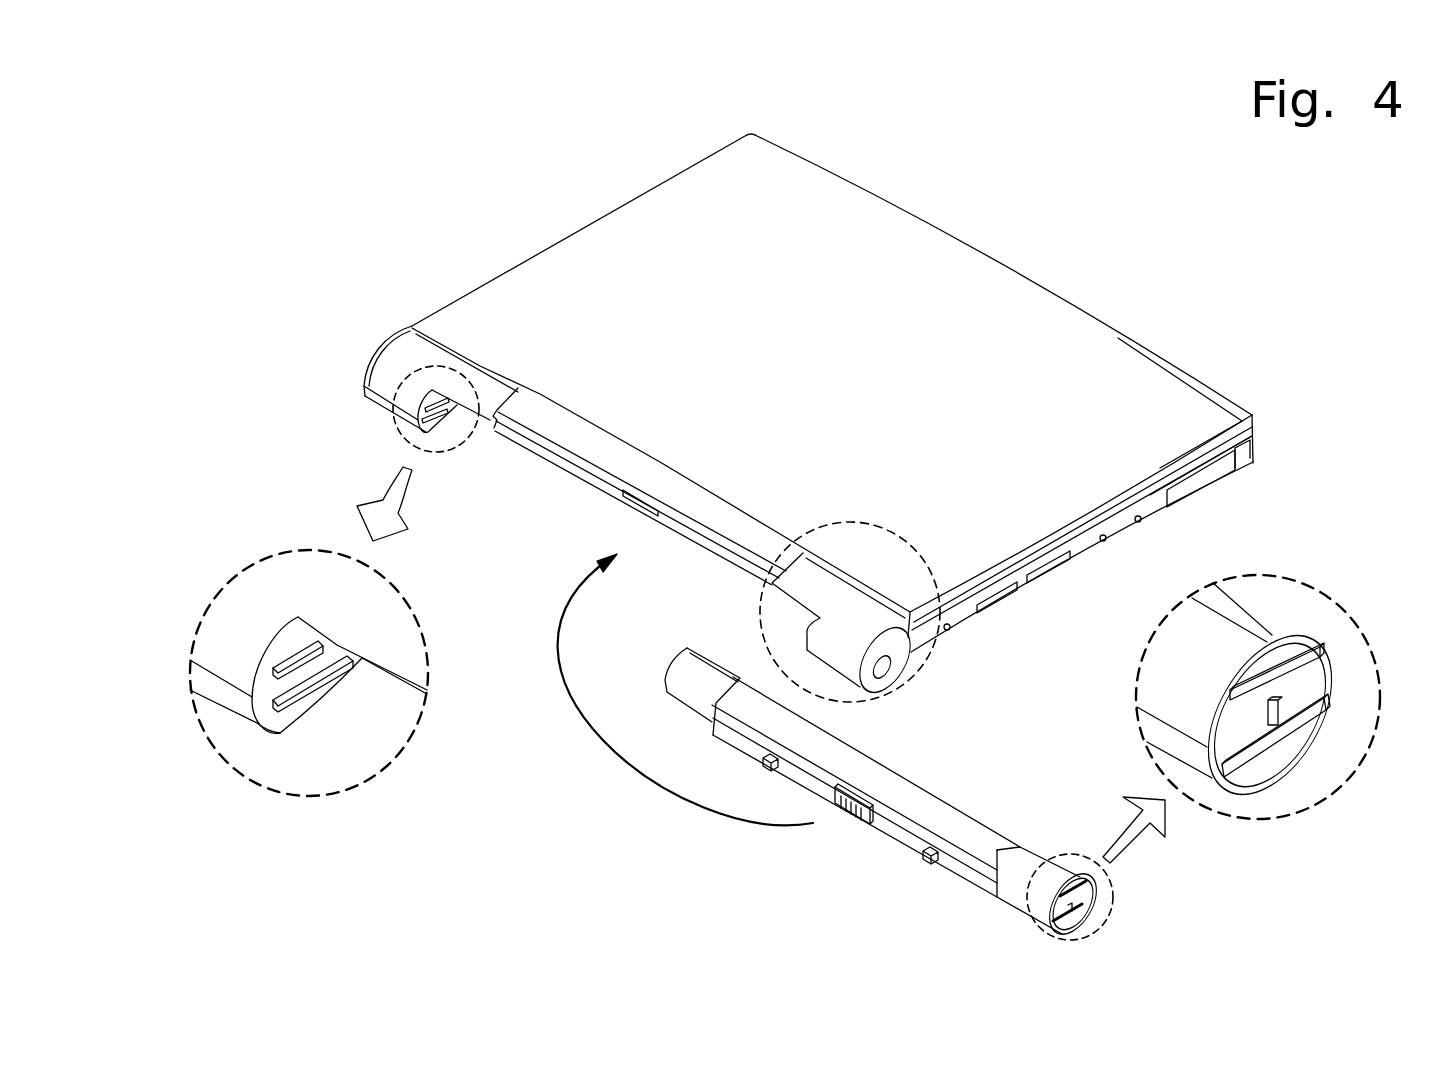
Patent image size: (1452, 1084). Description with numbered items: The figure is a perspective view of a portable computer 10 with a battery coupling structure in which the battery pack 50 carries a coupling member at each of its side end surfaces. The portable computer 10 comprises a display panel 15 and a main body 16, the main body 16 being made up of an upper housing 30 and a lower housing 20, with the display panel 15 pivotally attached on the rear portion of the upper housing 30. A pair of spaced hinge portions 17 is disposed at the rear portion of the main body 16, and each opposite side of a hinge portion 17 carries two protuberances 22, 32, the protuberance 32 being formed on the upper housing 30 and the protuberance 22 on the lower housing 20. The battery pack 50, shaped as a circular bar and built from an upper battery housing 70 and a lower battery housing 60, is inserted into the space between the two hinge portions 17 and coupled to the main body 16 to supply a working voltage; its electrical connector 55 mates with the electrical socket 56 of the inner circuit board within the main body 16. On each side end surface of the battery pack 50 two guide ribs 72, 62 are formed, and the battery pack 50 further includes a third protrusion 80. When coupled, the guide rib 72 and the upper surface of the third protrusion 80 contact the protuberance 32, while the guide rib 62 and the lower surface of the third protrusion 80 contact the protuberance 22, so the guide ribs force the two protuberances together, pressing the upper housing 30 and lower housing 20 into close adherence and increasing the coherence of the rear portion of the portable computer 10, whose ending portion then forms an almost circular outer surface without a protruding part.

The portable computer 10 is at (1015, 181).
The display panel 15 is at (1193, 402).
The main body 16 is at (1256, 445).
The hinge portion 17 is at (922, 656).
The lower housing 20 is at (370, 404).
The protuberance 22 is at (330, 673).
The upper housing 30 is at (387, 373).
The protuberance 32 is at (283, 667).
The battery pack 50 is at (953, 790).
The electrical connector 55 is at (847, 813).
The electrical socket 56 is at (633, 503).
The lower battery housing 60 is at (957, 875).
The guide rib 62 is at (1320, 737).
The upper battery housing 70 is at (987, 820).
The guide rib 72 is at (1307, 672).
The third protrusion 80 is at (1280, 725).